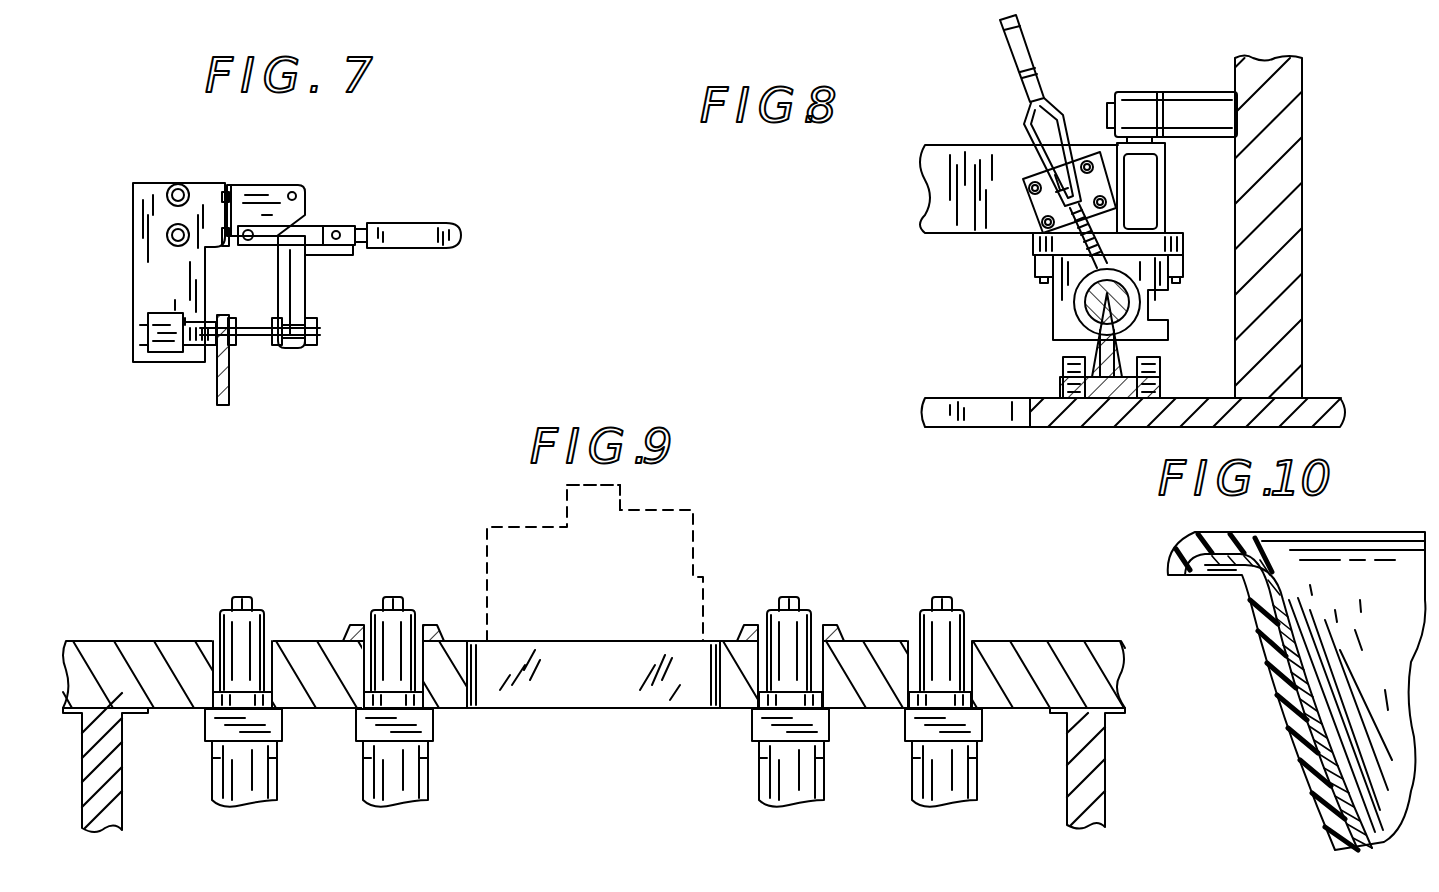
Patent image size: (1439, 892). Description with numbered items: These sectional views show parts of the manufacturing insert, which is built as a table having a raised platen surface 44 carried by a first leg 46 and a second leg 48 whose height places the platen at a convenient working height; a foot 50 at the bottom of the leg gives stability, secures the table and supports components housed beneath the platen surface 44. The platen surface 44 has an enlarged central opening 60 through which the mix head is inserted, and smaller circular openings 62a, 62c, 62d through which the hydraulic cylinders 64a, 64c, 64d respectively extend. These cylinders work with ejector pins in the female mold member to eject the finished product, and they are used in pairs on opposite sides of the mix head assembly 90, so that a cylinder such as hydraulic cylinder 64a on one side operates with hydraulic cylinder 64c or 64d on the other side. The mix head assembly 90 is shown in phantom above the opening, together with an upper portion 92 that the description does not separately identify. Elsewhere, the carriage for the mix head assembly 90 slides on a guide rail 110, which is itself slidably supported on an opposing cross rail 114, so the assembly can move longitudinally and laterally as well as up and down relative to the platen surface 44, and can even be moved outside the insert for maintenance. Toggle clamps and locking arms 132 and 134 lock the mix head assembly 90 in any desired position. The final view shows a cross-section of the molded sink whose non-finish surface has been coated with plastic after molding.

In FIG. 9, the platen surface 44 is at (122, 641).
In FIG. 8, the first leg 46 is at (1292, 303).
In FIG. 9, the first leg 46 is at (122, 805).
In FIG. 9, the second leg 48 is at (1105, 777).
In FIG. 8, the foot 50 is at (1058, 430).
In FIG. 9, the enlarged central opening 60 is at (712, 688).
In FIG. 9, the circular opening 62a is at (272, 640).
In FIG. 9, the circular opening 62c is at (822, 626).
In FIG. 9, the circular opening 62d is at (975, 640).
In FIG. 9, the hydraulic cylinder 64a is at (232, 594).
In FIG. 9, the hydraulic cylinder 64c is at (786, 594).
In FIG. 9, the hydraulic cylinder 64d is at (945, 622).
In FIG. 9, the mix head assembly 90 is at (700, 504).
In FIG. 9, the workpiece head portion 92 is at (618, 490).
In FIG. 8, the guide rail 110 is at (965, 148).
In FIG. 8, the cross rail 114 is at (1075, 298).
In FIG. 7, the toggle clamp 132 is at (421, 200).
In FIG. 8, the toggle clamp 134 is at (1024, 44).